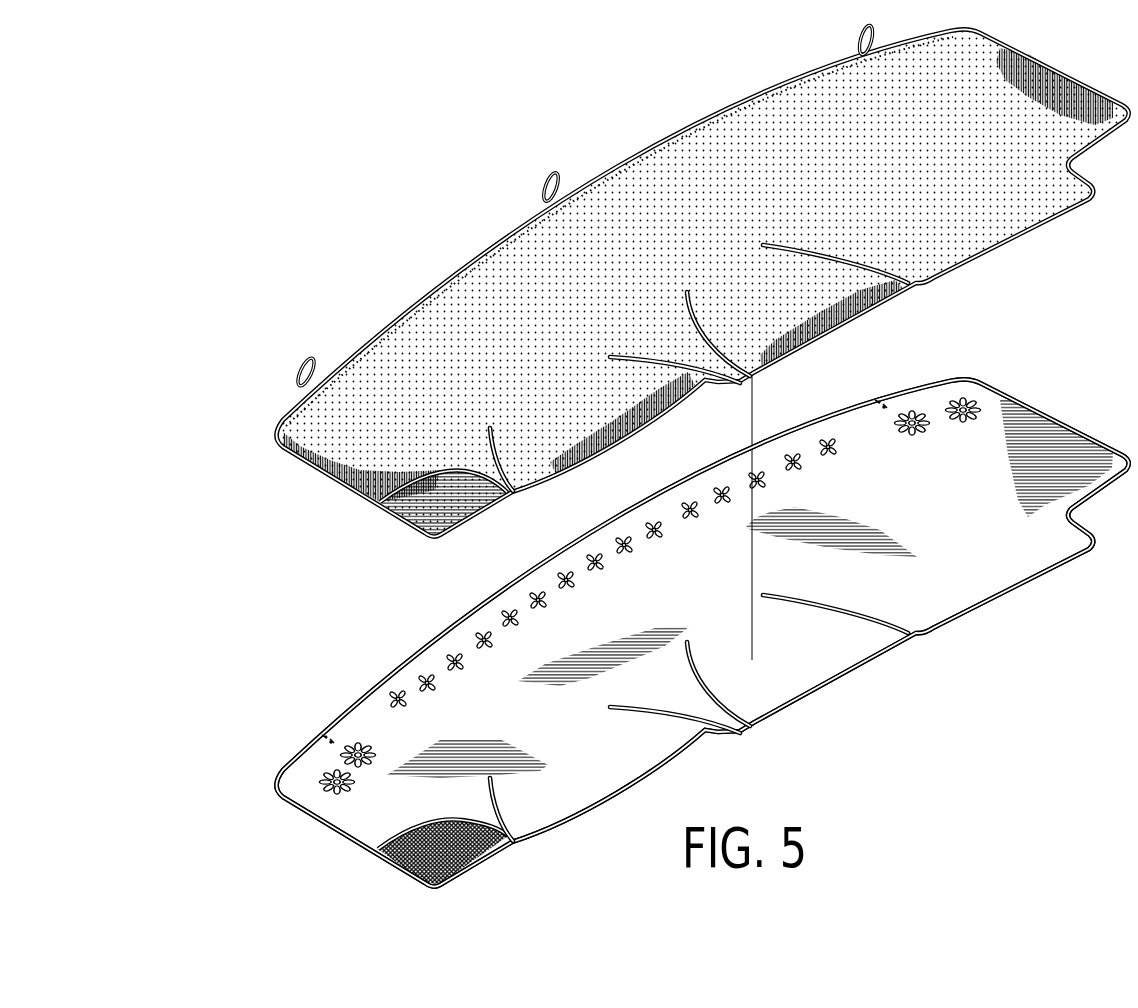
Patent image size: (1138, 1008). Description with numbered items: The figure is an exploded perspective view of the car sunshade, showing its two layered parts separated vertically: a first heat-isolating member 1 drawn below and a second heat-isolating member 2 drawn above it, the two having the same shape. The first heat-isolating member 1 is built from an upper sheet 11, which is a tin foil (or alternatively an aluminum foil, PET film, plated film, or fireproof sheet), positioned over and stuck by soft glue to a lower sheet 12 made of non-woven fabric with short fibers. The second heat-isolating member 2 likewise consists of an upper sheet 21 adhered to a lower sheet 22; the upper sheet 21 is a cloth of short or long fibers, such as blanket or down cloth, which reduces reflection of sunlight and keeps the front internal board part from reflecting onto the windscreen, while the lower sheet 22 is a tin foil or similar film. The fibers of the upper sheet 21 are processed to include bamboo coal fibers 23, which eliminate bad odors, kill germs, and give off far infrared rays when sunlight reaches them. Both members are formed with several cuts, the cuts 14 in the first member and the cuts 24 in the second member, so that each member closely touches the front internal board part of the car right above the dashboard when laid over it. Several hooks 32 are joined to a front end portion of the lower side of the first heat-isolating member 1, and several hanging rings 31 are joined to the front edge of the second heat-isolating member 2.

The first heat-isolating member 1 is at (270, 772).
The second heat-isolating member 2 is at (268, 430).
The upper sheet 11 is at (1020, 560).
The lower sheet 12 is at (977, 607).
The cuts 14 is at (905, 640).
The upper sheet 21 is at (517, 257).
The lower sheet 22 is at (432, 508).
The bamboo coal fibers 23 is at (353, 490).
The cuts 24 is at (515, 493).
The hanging rings 31 is at (858, 47).
The hooks 32 is at (578, 557).